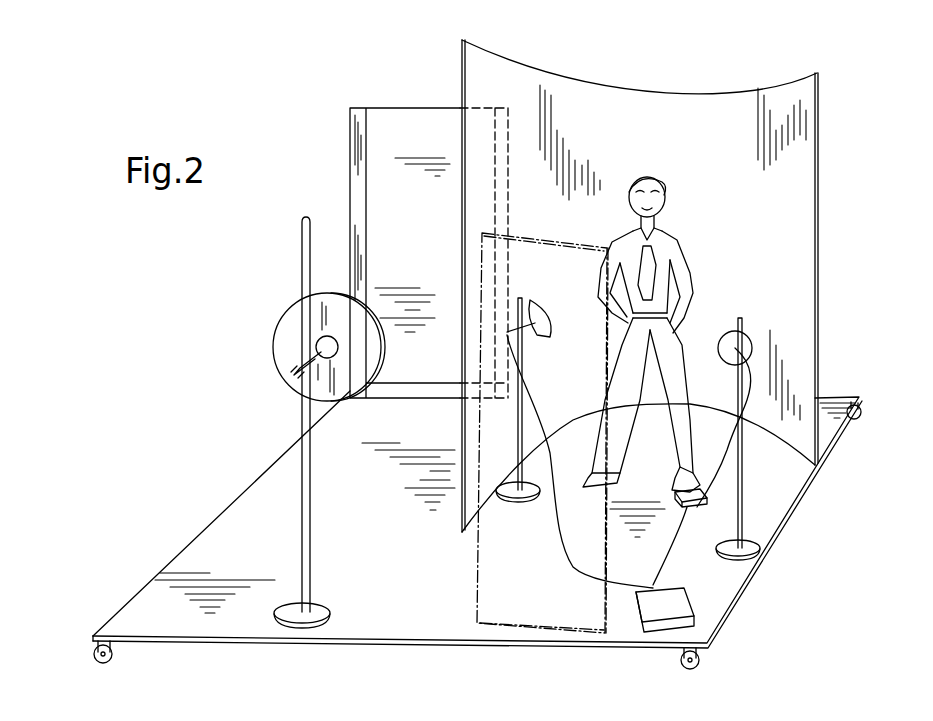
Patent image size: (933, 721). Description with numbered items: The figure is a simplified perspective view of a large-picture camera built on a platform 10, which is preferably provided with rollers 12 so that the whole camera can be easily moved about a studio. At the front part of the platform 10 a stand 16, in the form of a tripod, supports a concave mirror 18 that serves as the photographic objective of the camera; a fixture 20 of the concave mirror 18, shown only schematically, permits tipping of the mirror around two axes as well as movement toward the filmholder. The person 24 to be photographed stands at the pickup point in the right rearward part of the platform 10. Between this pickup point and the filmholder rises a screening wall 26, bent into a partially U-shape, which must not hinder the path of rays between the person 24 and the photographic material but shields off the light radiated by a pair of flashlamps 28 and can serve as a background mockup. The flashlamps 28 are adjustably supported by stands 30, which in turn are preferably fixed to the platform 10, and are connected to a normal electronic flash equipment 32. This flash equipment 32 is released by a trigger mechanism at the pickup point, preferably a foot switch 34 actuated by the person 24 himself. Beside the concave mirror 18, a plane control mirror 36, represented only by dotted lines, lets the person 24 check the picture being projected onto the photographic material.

The platform 10 is at (742, 572).
The casters 12 is at (106, 663).
The stand 16 is at (302, 541).
The concave mirror 18 is at (290, 311).
The fixture 20 is at (284, 366).
The person 24 is at (677, 256).
The screening wall 26 is at (468, 85).
The flashlamps 28 is at (543, 318).
The stands 30 is at (528, 497).
The electronic flash equipment 32 is at (684, 606).
The foot switch 34 is at (703, 489).
The plane control mirror 36 is at (480, 571).